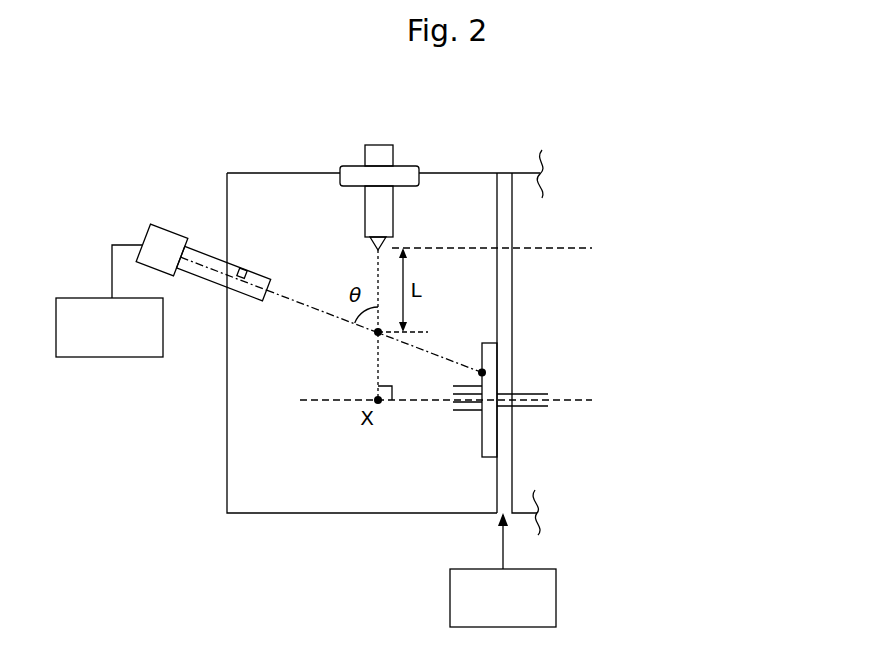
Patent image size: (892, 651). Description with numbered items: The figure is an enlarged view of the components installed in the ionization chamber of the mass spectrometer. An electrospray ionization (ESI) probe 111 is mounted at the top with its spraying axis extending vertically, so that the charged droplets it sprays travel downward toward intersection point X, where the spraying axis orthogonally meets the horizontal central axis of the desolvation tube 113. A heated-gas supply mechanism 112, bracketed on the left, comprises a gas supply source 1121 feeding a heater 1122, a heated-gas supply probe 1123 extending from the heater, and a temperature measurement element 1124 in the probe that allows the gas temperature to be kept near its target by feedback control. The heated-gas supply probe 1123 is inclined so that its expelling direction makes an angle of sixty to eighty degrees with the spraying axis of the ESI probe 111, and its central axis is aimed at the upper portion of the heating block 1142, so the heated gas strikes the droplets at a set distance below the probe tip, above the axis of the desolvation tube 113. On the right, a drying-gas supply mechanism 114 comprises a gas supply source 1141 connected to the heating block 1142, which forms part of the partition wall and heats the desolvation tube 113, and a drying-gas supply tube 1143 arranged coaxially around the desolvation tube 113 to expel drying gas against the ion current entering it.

The electrospray ionization (ESI) probe 111 is at (397, 163).
The heated-gas supply mechanism 112 is at (250, 138).
The gas supply source 1121 is at (93, 297).
The heater 1122 is at (165, 240).
The heated-gas supply probe 1123 is at (224, 273).
The temperature measurement element 1124 is at (242, 273).
The desolvation tube 113 is at (513, 410).
The drying-gas supply mechanism 114 is at (425, 572).
The gas supply source 1141 is at (450, 576).
The heating block 1142 is at (482, 457).
The drying-gas supply tube 1143 is at (453, 410).